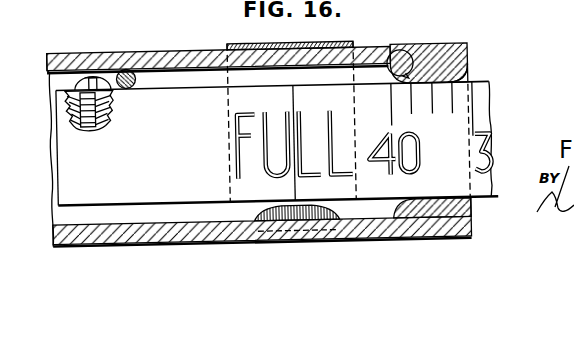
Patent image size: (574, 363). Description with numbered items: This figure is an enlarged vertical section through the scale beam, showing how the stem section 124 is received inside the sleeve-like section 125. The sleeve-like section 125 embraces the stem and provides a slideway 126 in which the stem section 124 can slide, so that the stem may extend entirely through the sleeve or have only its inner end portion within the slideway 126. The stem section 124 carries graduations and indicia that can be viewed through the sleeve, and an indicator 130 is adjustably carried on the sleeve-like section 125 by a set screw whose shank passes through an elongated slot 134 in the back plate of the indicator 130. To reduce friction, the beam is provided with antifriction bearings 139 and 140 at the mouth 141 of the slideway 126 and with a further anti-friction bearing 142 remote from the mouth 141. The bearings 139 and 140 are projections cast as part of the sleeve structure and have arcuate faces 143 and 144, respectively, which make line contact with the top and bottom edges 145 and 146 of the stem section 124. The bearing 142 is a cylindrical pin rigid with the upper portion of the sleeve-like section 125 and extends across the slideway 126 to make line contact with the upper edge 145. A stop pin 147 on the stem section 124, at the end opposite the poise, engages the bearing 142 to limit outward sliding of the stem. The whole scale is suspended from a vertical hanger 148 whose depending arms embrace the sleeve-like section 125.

The stem section 124 is at (492, 101).
The sleeve-like section 125 is at (207, 62).
The slideway 126 is at (169, 77).
The indicator 130 is at (352, 45).
The elongated slot 134 is at (298, 236).
The antifriction bearing 139 is at (469, 77).
The antifriction bearing 140 is at (446, 215).
The mouth 141 is at (471, 82).
The anti-friction bearing 142 is at (121, 69).
The arcuate face 143 is at (392, 54).
The arcuate face 144 is at (409, 211).
The top edge 145 is at (213, 87).
The bottom edge 146 is at (134, 203).
The stop pin 147 is at (79, 71).
The vertical hanger 148 is at (60, 14).